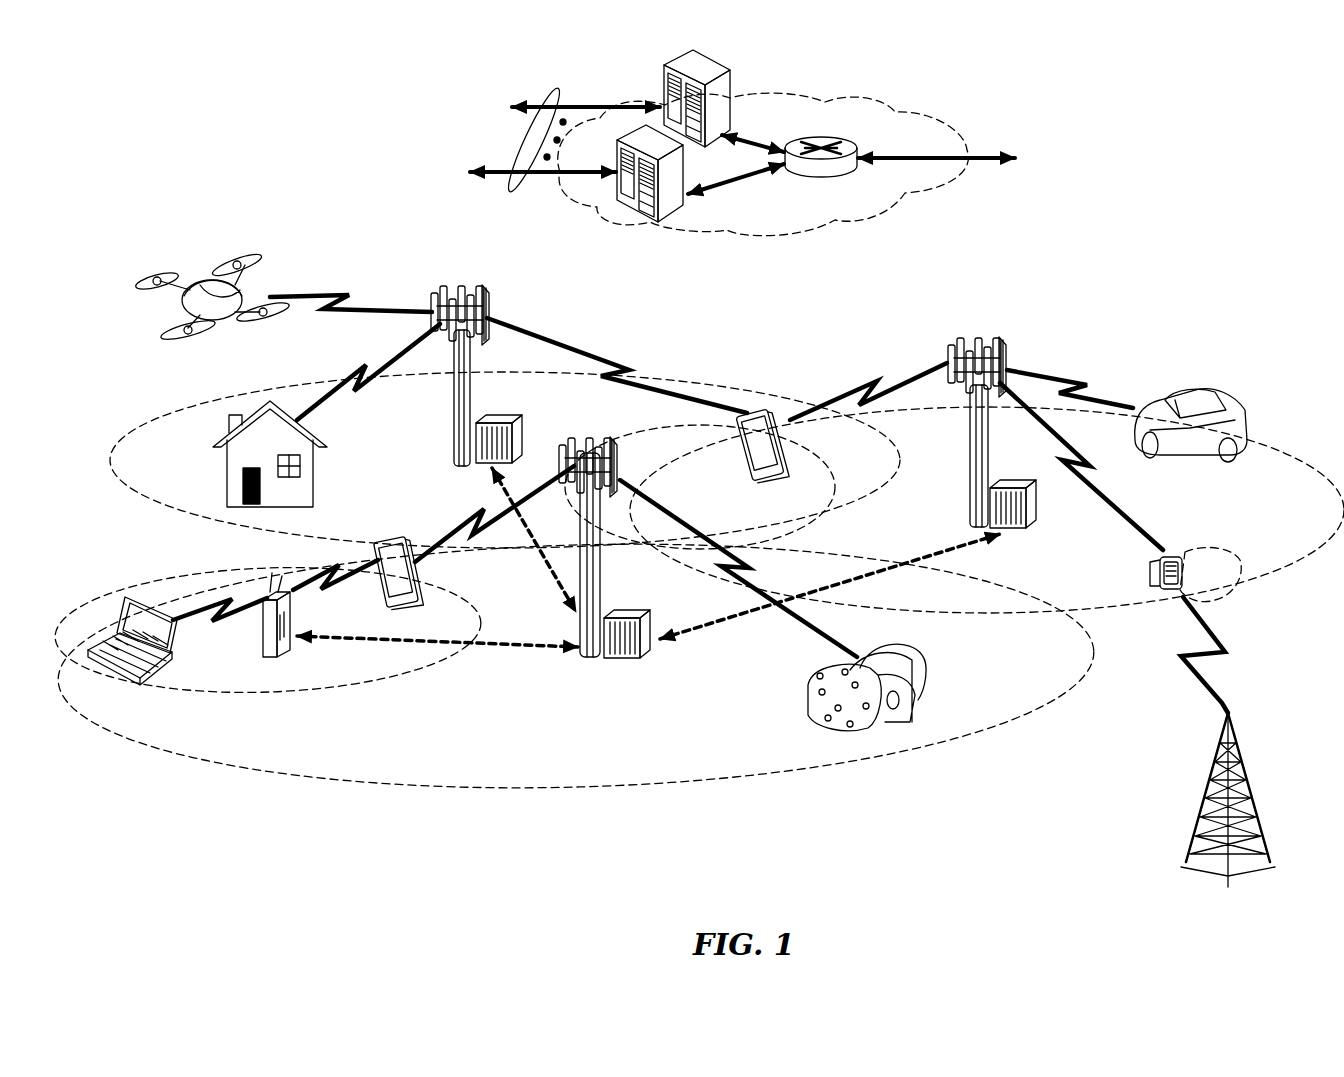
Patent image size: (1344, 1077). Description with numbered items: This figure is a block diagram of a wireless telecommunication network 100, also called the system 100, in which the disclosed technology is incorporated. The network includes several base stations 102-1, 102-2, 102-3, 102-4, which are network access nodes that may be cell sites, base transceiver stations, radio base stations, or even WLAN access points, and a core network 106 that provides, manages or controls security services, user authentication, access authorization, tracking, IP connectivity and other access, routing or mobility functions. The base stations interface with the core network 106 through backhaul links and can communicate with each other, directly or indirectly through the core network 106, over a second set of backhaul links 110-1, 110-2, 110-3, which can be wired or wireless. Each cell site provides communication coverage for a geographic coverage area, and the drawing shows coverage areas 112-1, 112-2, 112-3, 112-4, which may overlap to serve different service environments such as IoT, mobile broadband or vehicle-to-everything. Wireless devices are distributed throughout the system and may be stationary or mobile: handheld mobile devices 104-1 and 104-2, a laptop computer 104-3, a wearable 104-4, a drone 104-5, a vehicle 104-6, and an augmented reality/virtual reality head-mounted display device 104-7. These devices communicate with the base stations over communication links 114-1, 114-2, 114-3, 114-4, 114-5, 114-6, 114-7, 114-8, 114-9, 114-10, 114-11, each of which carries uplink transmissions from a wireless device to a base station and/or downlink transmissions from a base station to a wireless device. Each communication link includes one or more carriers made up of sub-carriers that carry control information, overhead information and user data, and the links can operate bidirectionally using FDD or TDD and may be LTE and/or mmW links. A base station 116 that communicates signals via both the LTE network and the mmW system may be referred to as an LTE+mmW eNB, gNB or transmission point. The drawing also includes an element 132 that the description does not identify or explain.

The wireless telecommunication network 100 is at (1247, 139).
The core network 106 is at (855, 226).
The satellite antenna / dish 132 is at (524, 184).
The base station 102-1 is at (585, 662).
The base station 102-2 is at (455, 452).
The base station 102-3 is at (975, 450).
The base station 102-4 is at (270, 658).
The handheld mobile device 104-1 is at (416, 562).
The handheld mobile device 104-2 is at (745, 460).
The laptop computer 104-3 is at (112, 688).
The wearable 104-4 is at (1180, 555).
The drone 104-5 is at (230, 322).
The vehicle 104-6 is at (1215, 405).
The head-mounted display device 104-7 is at (227, 470).
The backhaul link 110-1 is at (345, 647).
The backhaul link 110-2 is at (900, 568).
The backhaul link 110-3 is at (546, 572).
The geographic coverage area 112-1 is at (518, 793).
The geographic coverage area 112-2 is at (398, 700).
The geographic coverage area 112-3 is at (170, 520).
The geographic coverage area 112-4 is at (1285, 458).
The communication link 114-1 is at (748, 572).
The communication link 114-2 is at (475, 522).
The communication link 114-3 is at (224, 620).
The communication link 114-4 is at (340, 592).
The communication link 114-5 is at (340, 298).
The communication link 114-6 is at (625, 372).
The communication link 114-7 is at (863, 395).
The communication link 114-8 is at (1078, 460).
The communication link 114-9 is at (1072, 382).
The communication link 114-10 is at (1215, 658).
The communication link 114-11 is at (368, 385).
The base station 116 is at (1248, 795).